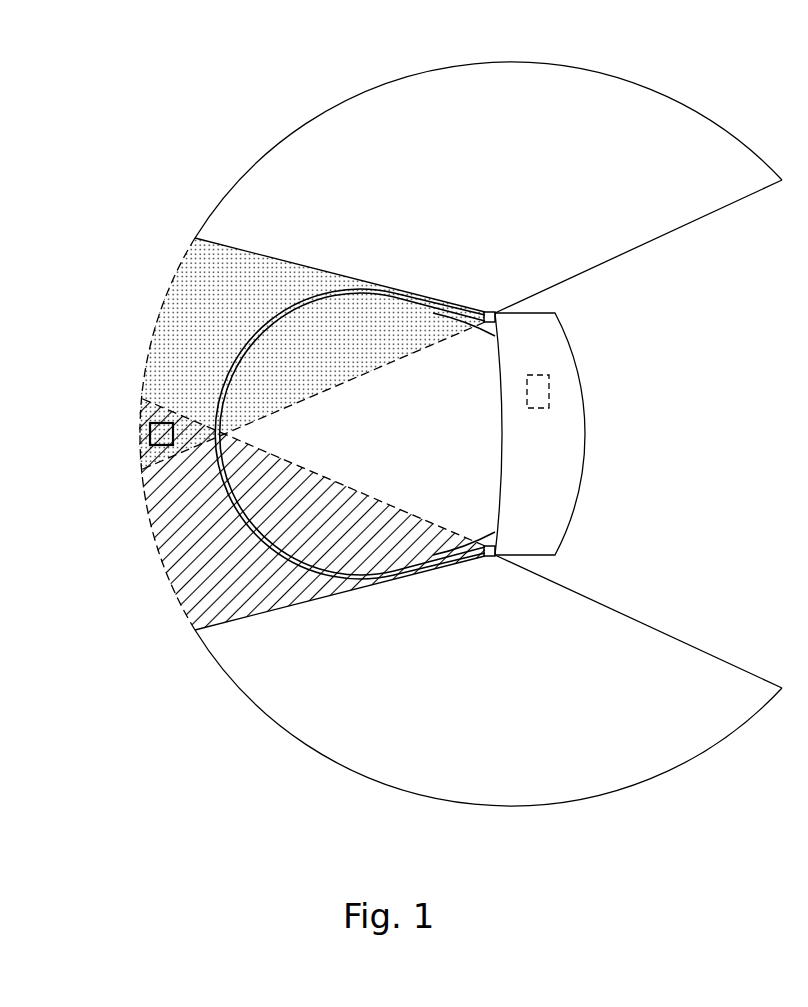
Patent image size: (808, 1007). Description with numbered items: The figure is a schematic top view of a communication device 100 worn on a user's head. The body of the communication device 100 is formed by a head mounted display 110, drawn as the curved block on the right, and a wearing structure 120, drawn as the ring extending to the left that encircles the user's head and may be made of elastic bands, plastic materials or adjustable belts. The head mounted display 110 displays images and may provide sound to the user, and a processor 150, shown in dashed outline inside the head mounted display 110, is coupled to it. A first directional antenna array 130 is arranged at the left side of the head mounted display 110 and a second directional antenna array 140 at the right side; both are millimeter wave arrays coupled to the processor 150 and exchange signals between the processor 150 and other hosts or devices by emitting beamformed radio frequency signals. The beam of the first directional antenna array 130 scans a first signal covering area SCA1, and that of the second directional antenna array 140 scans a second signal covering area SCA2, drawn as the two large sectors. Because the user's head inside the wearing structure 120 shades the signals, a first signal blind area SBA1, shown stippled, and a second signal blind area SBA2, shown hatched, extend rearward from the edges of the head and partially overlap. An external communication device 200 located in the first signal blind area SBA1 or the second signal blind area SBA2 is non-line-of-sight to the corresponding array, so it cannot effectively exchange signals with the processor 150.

The communication device 100 is at (686, 288).
The head mounted display 110 is at (560, 480).
The wearing structure 120 is at (253, 530).
The first directional antenna array 130 is at (497, 320).
The second directional antenna array 140 is at (495, 550).
The processor 150 is at (546, 390).
The external communication device 200 is at (150, 431).
The first signal blind area SBA1 is at (168, 343).
The second signal blind area SBA2 is at (168, 518).
The first signal covering area SCA1 is at (390, 105).
The second signal covering area SCA2 is at (390, 763).